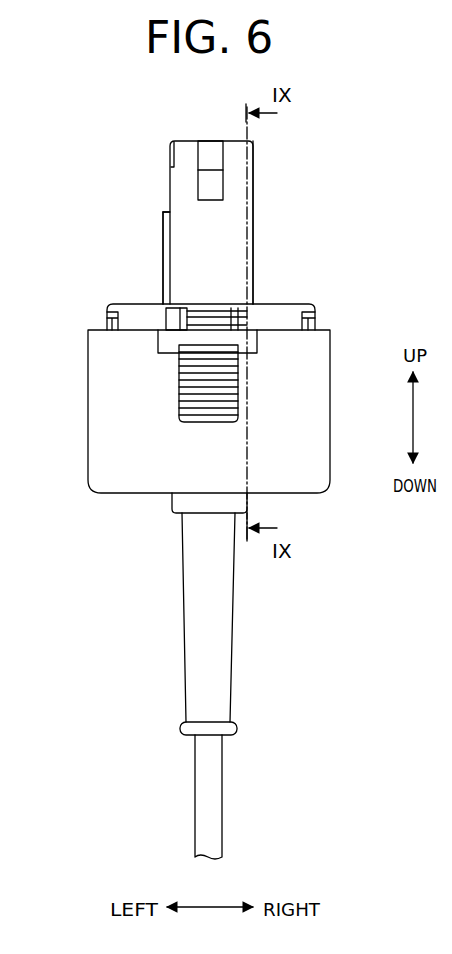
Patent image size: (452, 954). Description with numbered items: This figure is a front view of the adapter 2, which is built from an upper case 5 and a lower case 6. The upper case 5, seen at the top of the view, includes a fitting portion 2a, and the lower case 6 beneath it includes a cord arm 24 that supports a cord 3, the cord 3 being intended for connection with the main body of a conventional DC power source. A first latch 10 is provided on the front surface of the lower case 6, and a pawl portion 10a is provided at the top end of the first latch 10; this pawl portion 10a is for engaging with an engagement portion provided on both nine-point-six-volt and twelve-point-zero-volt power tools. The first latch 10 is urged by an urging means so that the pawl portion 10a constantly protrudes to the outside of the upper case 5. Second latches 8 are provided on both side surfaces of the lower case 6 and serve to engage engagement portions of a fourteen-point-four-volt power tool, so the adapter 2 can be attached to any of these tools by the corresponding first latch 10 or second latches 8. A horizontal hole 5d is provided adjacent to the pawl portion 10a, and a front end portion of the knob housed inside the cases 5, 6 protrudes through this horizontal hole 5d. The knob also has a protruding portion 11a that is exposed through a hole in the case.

The adapter 2 is at (145, 303).
The fitting portion 2a is at (238, 173).
The cord 3 is at (223, 790).
The upper case 5 is at (253, 205).
The horizontal hole 5d is at (166, 320).
The lower case 6 is at (88, 428).
The second latches 8 is at (107, 320).
The first latch 10 is at (240, 377).
The pawl portion 10a is at (247, 318).
The protruding portion 11a is at (163, 222).
The cord arm 24 is at (232, 650).